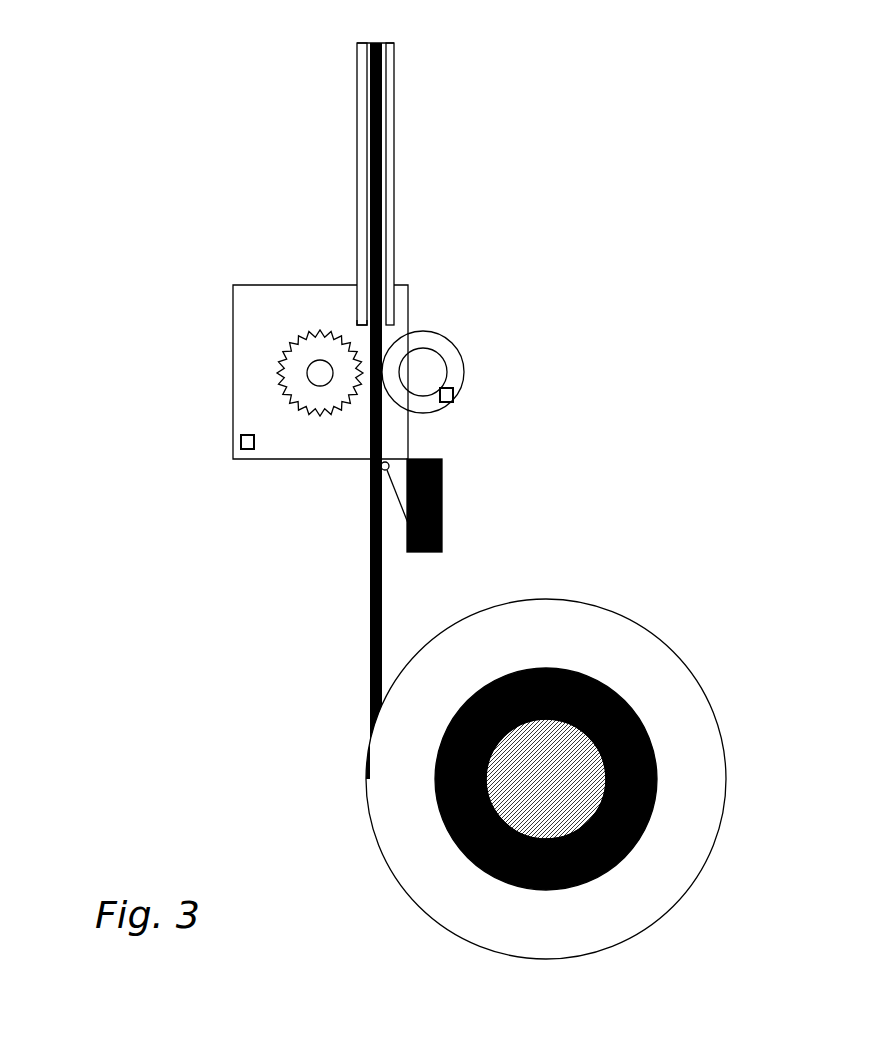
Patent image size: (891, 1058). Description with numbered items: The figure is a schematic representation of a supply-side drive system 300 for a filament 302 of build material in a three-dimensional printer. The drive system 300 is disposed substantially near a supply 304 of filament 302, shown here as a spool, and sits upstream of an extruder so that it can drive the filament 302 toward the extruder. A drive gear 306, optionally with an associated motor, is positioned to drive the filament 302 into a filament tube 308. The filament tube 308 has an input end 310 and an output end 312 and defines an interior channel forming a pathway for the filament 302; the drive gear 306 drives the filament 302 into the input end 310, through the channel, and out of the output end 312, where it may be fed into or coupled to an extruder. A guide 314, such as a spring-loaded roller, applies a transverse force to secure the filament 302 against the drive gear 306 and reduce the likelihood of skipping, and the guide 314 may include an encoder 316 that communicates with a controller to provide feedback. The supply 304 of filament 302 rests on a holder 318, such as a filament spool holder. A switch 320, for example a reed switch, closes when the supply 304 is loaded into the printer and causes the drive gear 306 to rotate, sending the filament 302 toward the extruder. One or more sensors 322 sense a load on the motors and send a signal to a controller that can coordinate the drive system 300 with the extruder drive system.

The drive system 300 is at (476, 501).
The filament 302 is at (369, 592).
The supply of filament 304 is at (697, 667).
The drive gear 306 is at (277, 368).
The filament tube 308 is at (388, 128).
The input end 310 is at (362, 325).
The output end 312 is at (357, 45).
The guide 314 is at (463, 362).
The encoder 316 is at (455, 394).
The holder 318 is at (565, 792).
The switch 320 is at (442, 487).
The sensors 322 is at (241, 441).